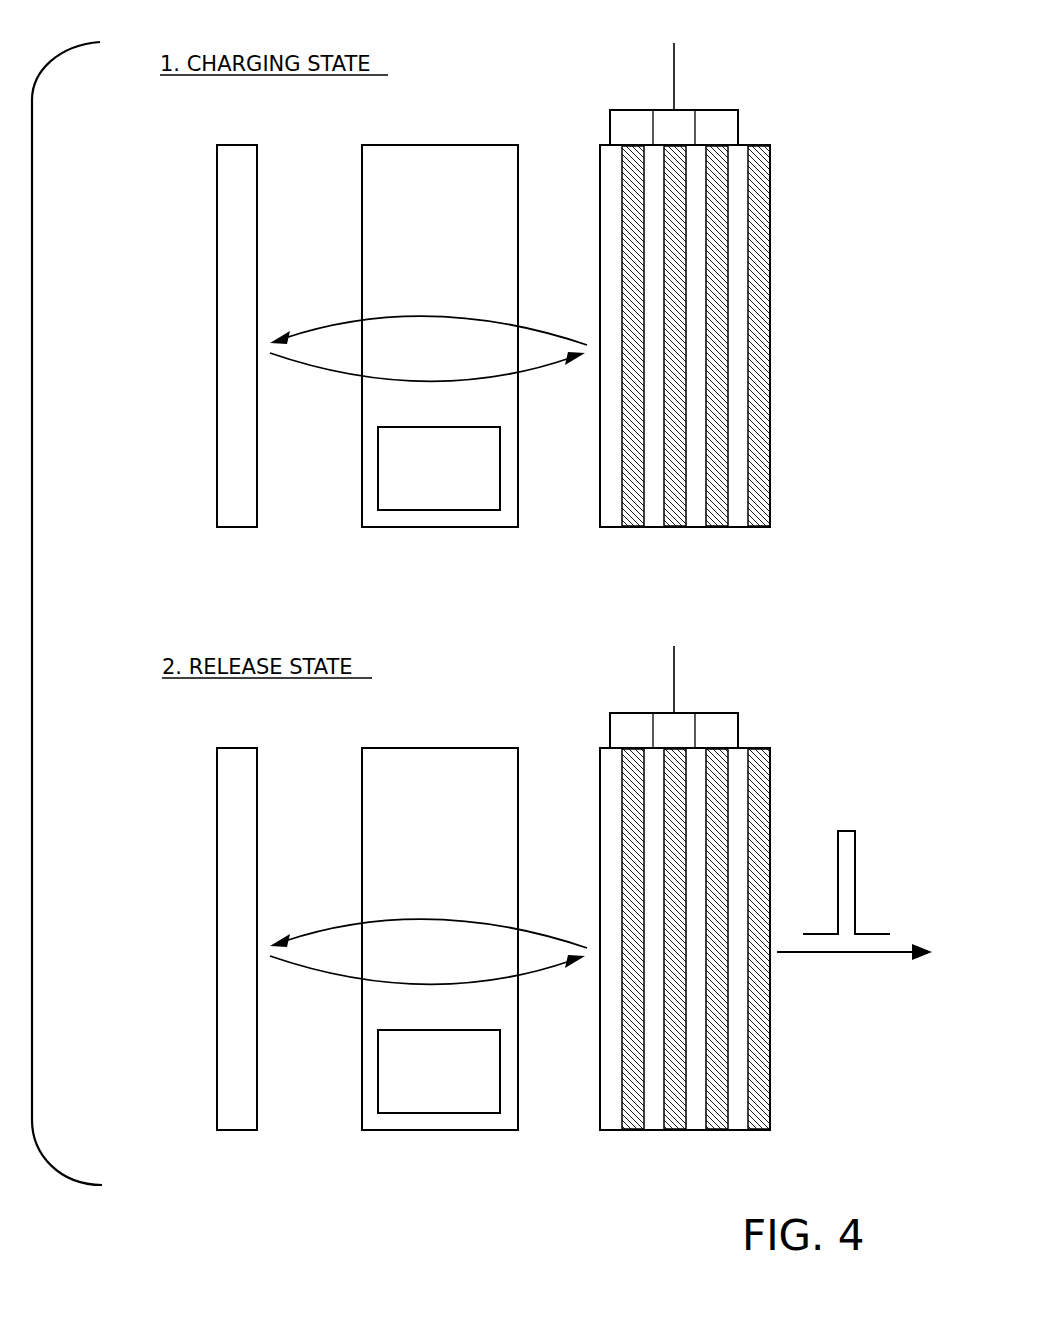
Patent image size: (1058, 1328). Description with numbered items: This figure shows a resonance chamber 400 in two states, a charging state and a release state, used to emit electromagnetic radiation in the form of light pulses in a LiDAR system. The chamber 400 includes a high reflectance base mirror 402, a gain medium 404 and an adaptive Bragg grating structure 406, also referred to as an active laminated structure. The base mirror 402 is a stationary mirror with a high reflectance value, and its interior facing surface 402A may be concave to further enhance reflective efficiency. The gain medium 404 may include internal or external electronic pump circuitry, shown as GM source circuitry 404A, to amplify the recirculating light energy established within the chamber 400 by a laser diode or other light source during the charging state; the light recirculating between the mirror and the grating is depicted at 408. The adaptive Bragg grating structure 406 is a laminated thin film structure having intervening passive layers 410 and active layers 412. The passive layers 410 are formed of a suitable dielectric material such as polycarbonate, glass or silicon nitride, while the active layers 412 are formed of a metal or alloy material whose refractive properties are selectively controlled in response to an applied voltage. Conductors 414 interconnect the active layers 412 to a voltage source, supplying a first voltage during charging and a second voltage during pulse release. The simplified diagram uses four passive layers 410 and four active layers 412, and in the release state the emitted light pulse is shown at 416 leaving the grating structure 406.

The resonance chamber 400 is at (795, 36).
The base mirror 402 is at (217, 232).
The interior facing surface 402A is at (258, 490).
The gain medium 404 is at (362, 232).
The GM source circuitry 404A is at (443, 510).
The adaptive Bragg grating structure 406 is at (703, 616).
The resonating optical beam 408 is at (338, 375).
The passive layers 410 is at (608, 193).
The active layers 412 is at (760, 192).
The conductors 414 is at (674, 77).
The output pulse 416 is at (855, 870).